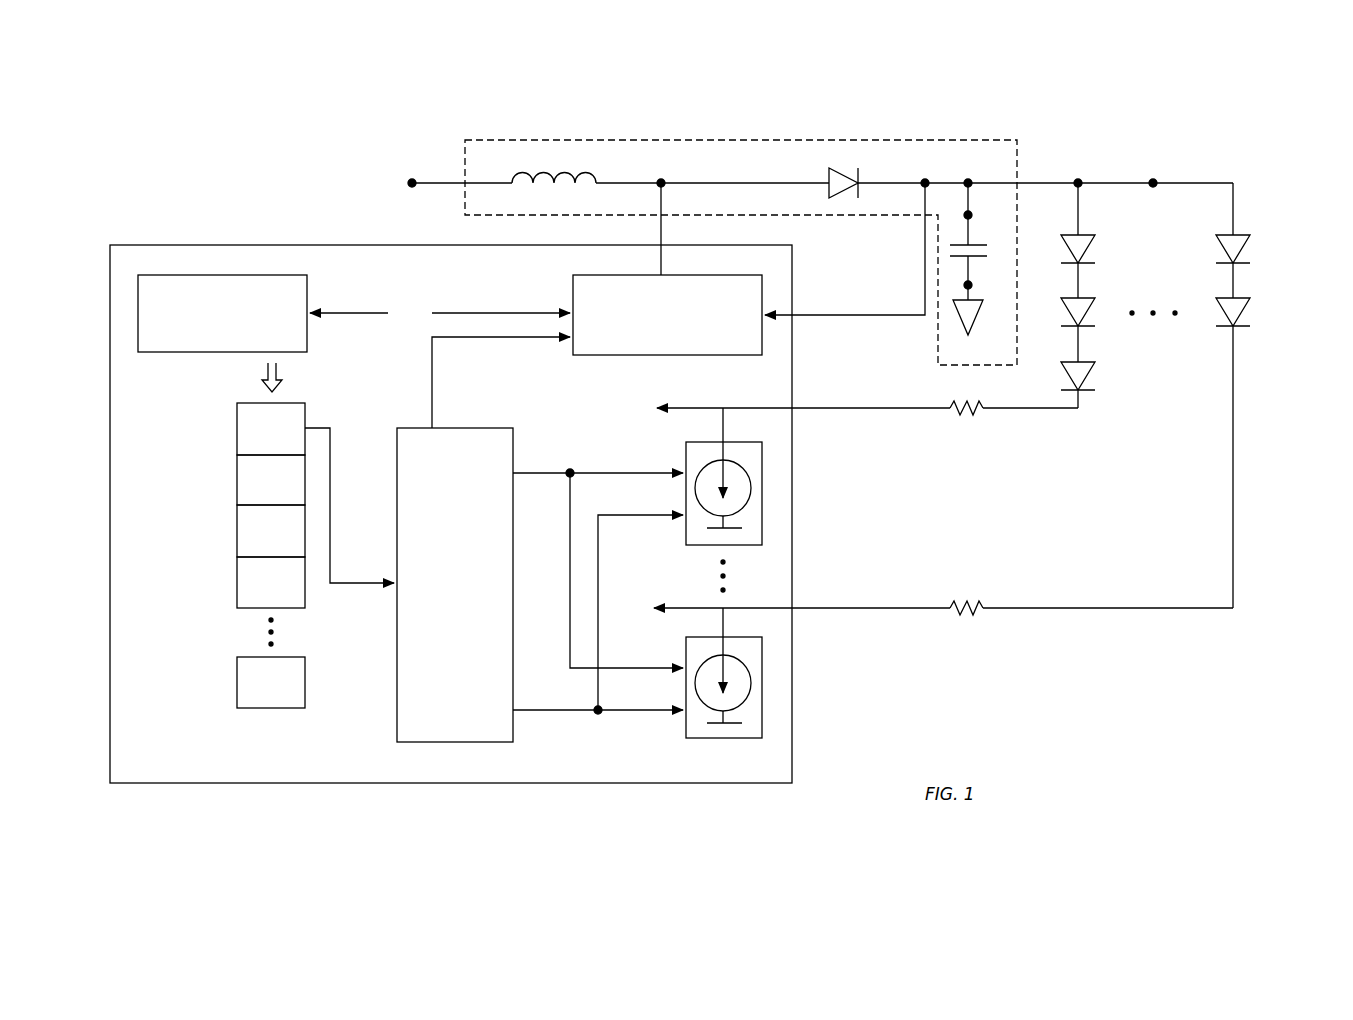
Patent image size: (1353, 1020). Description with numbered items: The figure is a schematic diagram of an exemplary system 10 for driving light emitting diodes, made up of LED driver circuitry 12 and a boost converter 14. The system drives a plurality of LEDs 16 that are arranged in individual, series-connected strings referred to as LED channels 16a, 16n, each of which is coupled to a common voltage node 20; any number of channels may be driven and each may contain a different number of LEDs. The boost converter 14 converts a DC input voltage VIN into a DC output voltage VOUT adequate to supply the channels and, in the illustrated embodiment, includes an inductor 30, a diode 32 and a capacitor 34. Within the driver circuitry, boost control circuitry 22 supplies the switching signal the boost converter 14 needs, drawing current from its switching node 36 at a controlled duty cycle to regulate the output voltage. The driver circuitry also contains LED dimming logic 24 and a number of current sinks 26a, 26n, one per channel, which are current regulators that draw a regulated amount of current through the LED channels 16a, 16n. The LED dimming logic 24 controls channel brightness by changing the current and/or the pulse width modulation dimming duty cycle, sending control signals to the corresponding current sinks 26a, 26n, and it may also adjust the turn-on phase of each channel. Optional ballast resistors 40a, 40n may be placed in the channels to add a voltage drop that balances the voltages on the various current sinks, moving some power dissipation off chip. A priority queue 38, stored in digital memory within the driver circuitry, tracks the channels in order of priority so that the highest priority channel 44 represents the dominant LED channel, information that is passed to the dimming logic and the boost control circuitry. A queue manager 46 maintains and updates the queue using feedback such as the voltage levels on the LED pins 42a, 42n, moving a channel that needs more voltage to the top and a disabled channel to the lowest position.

The system 10 is at (351, 92).
The LED driver circuitry 12 is at (199, 245).
The boost converter 14 is at (648, 140).
The LEDs 16 is at (1252, 147).
The LED channel 16a is at (1080, 210).
The LED channel 16n is at (1231, 210).
The common voltage node 20 is at (1155, 180).
The boost control circuitry 22 is at (667, 315).
The LED dimming logic 24 is at (455, 585).
The current sink 26a is at (732, 444).
The current sink 26n is at (732, 639).
The inductor 30 is at (572, 177).
The diode 32 is at (831, 173).
The capacitor 34 is at (974, 244).
The switching node 36 is at (664, 180).
The priority queue 38 is at (234, 480).
The ballast resistor 40a is at (966, 407).
The ballast resistor 40n is at (966, 607).
The LED pin 42a is at (852, 407).
The LED pin 42n is at (852, 607).
The highest priority channel 44 is at (310, 418).
The queue manager 46 is at (222, 313).